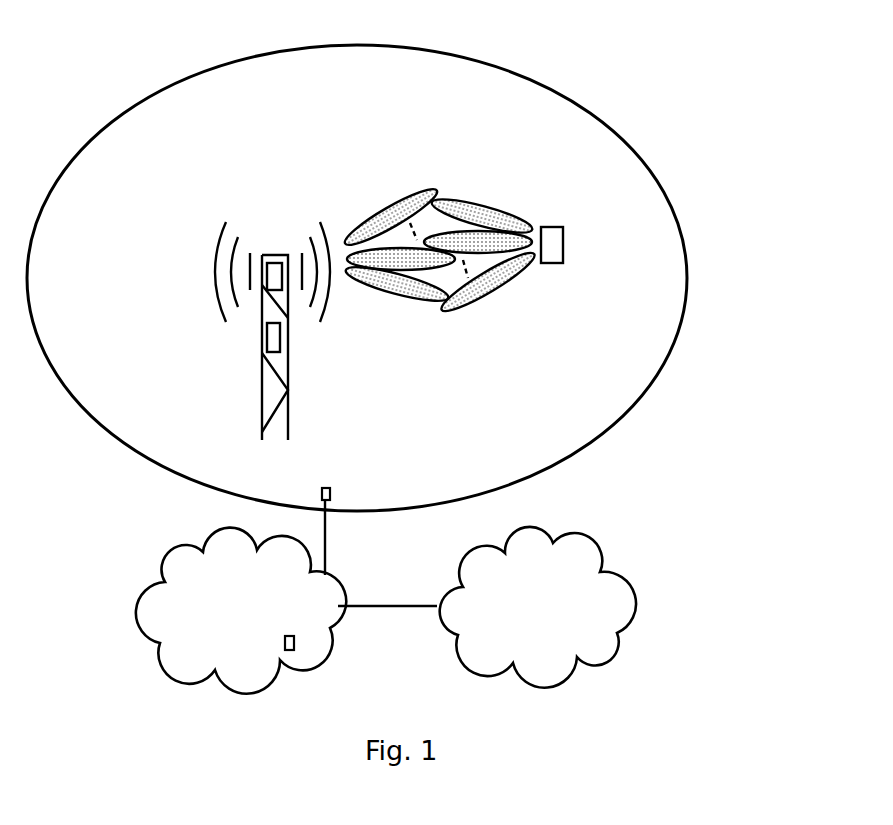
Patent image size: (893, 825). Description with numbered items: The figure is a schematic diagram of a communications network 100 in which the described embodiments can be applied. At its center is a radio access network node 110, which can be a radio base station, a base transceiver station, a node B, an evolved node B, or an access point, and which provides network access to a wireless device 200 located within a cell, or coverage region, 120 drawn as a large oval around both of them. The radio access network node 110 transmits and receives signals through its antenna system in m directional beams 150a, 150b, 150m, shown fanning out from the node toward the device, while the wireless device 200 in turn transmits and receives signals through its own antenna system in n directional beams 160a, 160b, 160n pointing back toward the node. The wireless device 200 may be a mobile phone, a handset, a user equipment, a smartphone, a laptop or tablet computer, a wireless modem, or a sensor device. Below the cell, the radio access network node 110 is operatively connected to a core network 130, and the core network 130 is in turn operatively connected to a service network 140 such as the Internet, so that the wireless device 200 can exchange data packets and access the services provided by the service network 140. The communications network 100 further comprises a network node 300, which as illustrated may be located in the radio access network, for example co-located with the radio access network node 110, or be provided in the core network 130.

The communications network 100 is at (658, 45).
The radio access network node 110 is at (262, 417).
The cell 120 is at (588, 447).
The core network 130 is at (217, 580).
The service network 140 is at (552, 578).
The directional beam 150a is at (400, 297).
The directional beam 150b is at (368, 250).
The directional beam 150m is at (432, 192).
The directional beam 160a is at (510, 232).
The directional beam 160b is at (461, 228).
The directional beam 160n is at (487, 300).
The wireless device 200 is at (555, 263).
The network node 300 is at (262, 345).